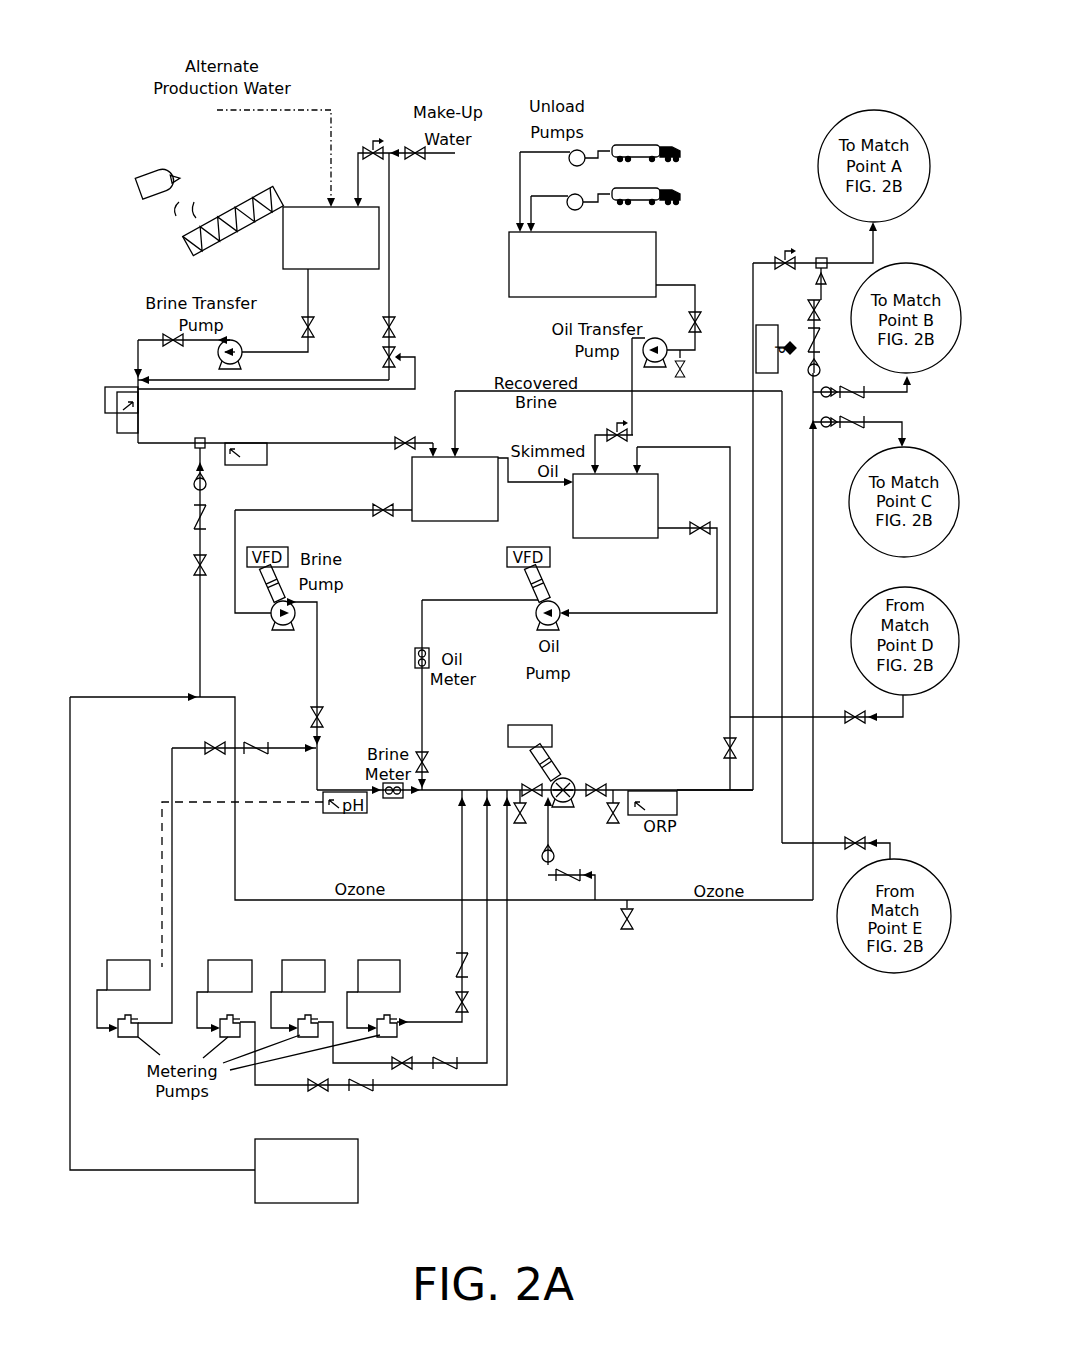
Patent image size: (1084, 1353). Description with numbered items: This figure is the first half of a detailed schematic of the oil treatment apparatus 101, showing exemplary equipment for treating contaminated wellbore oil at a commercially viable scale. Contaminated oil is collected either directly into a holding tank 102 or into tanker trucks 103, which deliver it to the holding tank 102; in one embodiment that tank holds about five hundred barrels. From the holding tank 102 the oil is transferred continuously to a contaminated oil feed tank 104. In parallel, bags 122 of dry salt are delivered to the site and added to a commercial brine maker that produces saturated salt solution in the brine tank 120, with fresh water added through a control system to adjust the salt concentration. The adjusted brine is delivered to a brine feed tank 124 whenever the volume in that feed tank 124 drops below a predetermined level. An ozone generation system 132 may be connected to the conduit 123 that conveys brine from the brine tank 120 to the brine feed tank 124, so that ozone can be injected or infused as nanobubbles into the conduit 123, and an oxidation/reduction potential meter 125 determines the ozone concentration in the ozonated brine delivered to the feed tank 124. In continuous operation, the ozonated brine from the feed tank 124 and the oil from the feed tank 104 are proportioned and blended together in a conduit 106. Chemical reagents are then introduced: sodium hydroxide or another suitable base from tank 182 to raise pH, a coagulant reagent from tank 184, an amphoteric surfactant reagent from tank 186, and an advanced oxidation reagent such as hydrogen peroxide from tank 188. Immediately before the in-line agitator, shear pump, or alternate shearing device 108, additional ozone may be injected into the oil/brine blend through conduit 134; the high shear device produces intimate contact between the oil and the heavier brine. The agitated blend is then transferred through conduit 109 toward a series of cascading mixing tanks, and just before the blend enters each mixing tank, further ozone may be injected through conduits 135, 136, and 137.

The oil treatment apparatus 101 is at (762, 71).
The holding tank 102 is at (660, 241).
The tanker trucks 103 is at (681, 192).
The contaminated oil feed tank 104 is at (637, 538).
The conduit 106 is at (683, 612).
The shearing device 108 is at (557, 759).
The conduit 109 is at (713, 788).
The brine tank 120 is at (333, 272).
The bags of dry salt 122 is at (148, 193).
The conduit 123 is at (354, 441).
The brine feed tank 124 is at (474, 521).
The oxidation/reduction potential (ORP) meter 125 is at (247, 465).
The ozone generation system 132 is at (333, 1203).
The conduit 134 is at (551, 824).
The conduit 135 is at (819, 318).
The conduit 136 is at (892, 394).
The conduit 137 is at (875, 424).
The tank 182 is at (110, 972).
The tank 184 is at (233, 946).
The tank 186 is at (317, 946).
The tank 188 is at (378, 960).